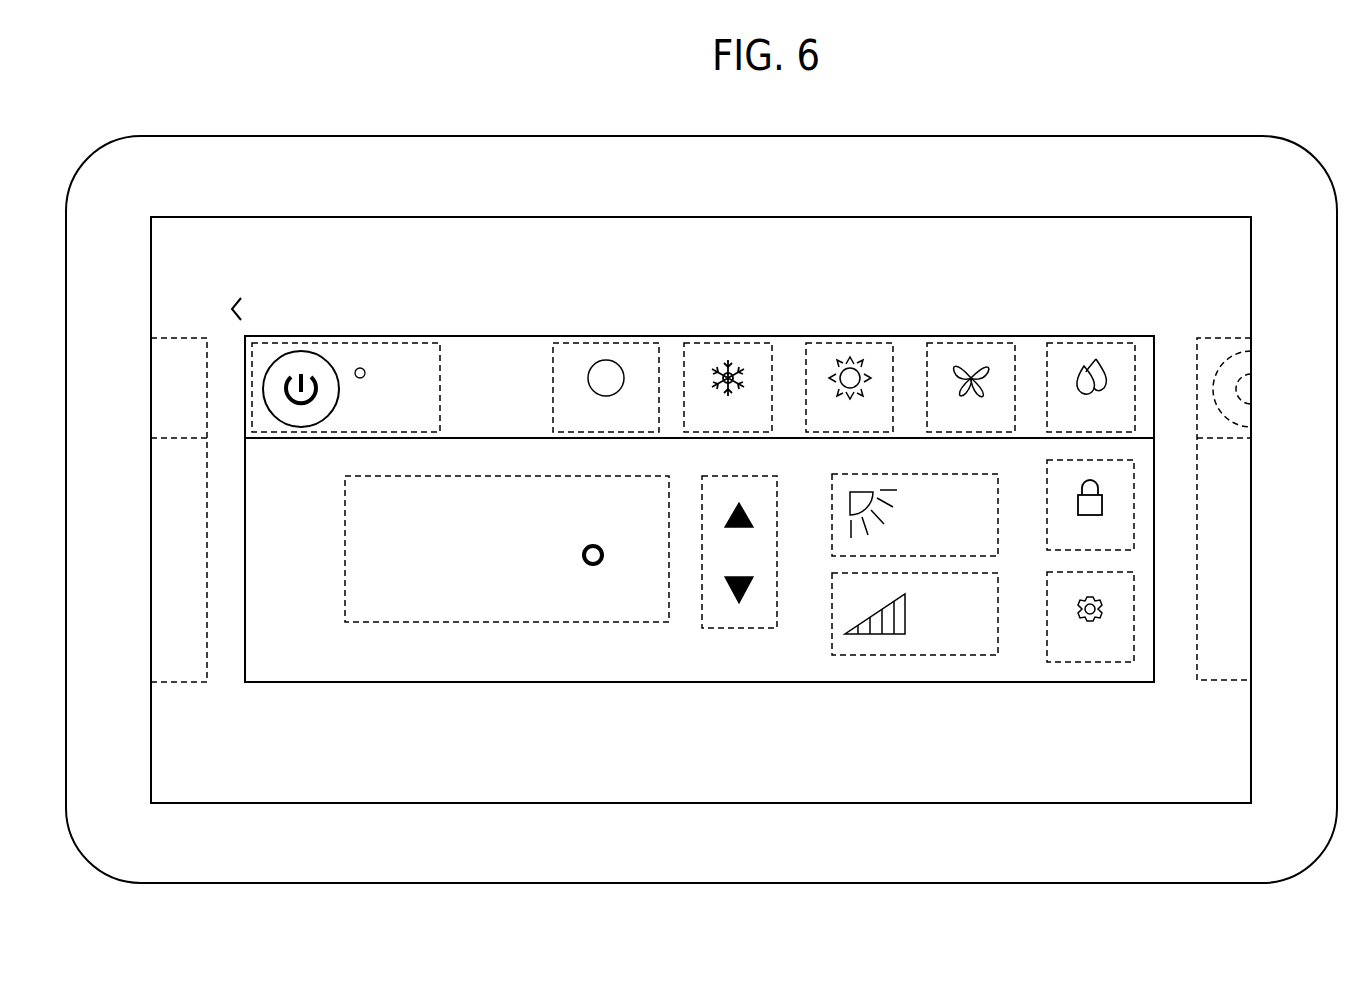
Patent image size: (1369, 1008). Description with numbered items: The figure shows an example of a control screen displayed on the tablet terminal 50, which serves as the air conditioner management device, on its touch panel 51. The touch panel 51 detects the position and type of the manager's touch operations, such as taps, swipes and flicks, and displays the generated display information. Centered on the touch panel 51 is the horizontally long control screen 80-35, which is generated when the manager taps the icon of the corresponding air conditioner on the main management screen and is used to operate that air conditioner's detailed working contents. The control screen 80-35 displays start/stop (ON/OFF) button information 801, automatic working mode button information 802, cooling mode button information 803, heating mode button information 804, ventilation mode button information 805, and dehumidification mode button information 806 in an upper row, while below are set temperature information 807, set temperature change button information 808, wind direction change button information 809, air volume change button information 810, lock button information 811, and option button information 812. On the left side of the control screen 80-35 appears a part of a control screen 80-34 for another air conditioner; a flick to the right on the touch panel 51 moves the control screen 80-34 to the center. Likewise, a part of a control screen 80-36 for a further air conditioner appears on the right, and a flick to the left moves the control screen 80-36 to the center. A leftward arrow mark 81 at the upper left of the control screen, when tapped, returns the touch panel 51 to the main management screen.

The tablet terminal 50 is at (1130, 137).
The touch panel 51 is at (1067, 217).
The control screen 80-34 is at (175, 338).
The control screen 80-35 is at (690, 336).
The control screen 80-36 is at (1225, 338).
The leftward arrow mark 81 is at (240, 303).
The start/stop (ON/OFF) button information 801 is at (337, 435).
The automatic working mode button information 802 is at (618, 343).
The cooling mode button information 803 is at (765, 343).
The heating mode button information 804 is at (852, 343).
The ventilation mode button information 805 is at (980, 343).
The dehumidification mode button information 806 is at (1102, 343).
The set temperature information 807 is at (527, 622).
The set temperature change button information 808 is at (740, 630).
The wind direction change button information 809 is at (832, 545).
The air volume change button information 810 is at (832, 630).
The lock button information 811 is at (1134, 500).
The option button information 812 is at (1105, 662).